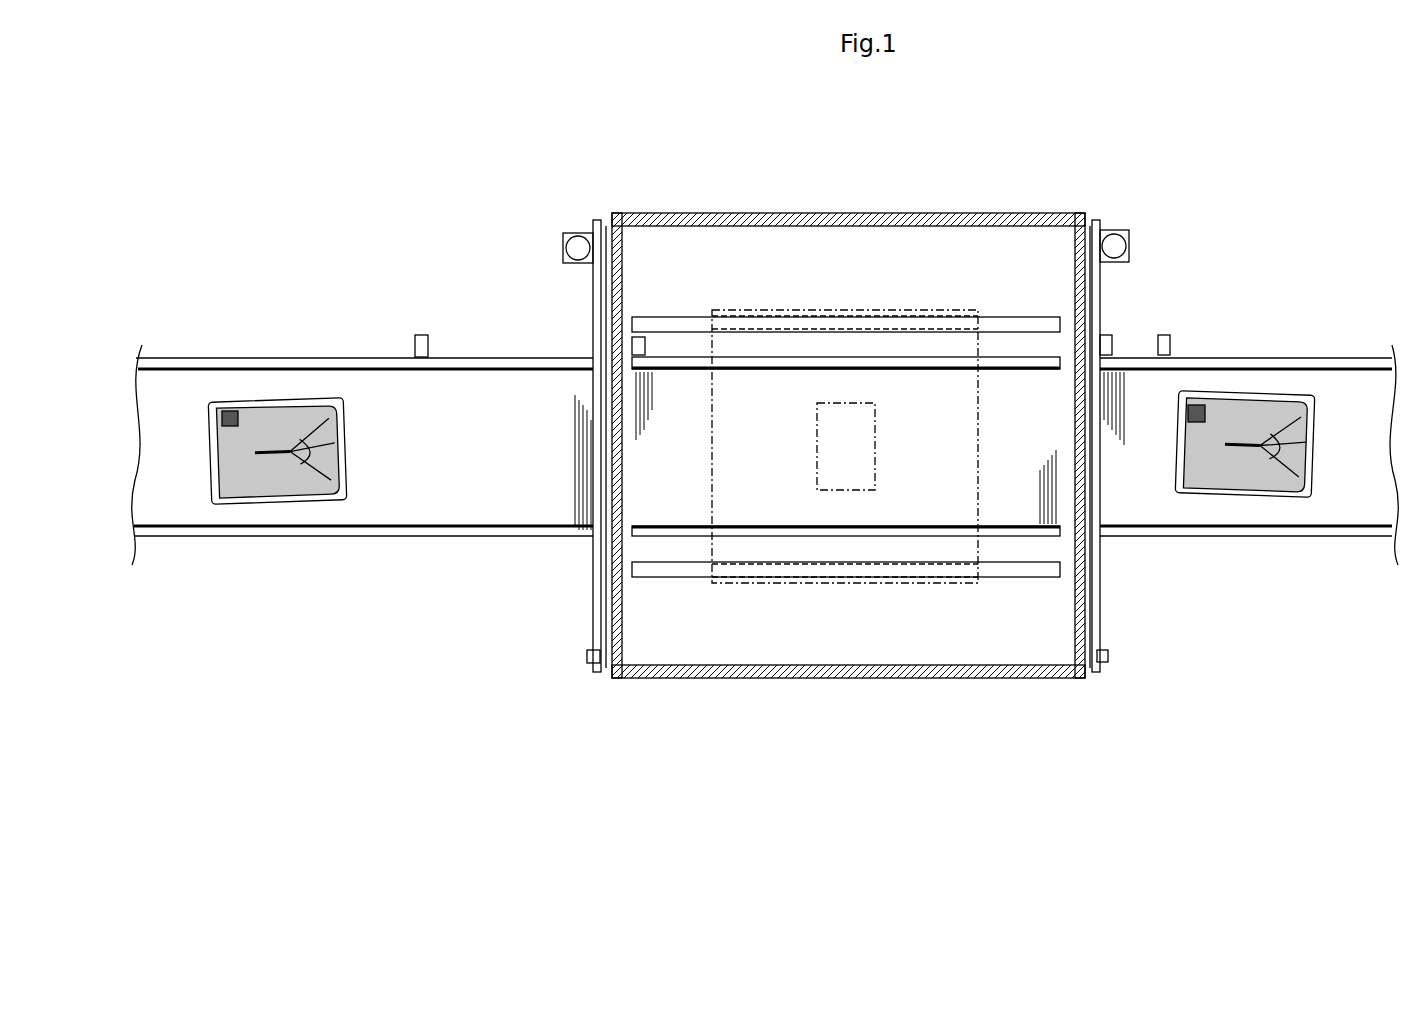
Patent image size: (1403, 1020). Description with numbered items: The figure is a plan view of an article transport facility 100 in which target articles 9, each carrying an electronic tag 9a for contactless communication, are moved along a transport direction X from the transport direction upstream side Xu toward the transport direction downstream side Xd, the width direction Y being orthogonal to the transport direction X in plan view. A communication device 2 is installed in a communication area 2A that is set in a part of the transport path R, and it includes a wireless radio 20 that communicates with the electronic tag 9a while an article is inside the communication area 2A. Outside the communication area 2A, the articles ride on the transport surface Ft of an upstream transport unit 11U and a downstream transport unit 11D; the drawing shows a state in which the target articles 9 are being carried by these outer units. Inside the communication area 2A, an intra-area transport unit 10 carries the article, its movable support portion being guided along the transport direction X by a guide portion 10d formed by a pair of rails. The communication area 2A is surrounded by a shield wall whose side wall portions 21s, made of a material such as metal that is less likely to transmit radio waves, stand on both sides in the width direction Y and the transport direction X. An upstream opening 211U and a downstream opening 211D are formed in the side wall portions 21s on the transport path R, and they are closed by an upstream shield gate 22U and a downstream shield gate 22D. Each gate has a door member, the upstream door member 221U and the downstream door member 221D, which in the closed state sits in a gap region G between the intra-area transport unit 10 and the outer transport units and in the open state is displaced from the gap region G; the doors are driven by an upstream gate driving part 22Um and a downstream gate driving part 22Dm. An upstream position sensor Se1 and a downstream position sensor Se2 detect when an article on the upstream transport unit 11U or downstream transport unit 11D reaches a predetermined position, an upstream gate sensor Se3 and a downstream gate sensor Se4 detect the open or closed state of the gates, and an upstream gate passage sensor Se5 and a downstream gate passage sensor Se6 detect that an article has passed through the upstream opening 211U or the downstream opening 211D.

The article transport facility 100 is at (288, 170).
The upstream transport unit 11U is at (205, 290).
The downstream transport unit 11D is at (1320, 337).
The transport surface Ft is at (370, 392).
The transport path R is at (290, 560).
The target article 9 is at (345, 465).
The electronic tag 9a is at (220, 410).
The communication device 2 is at (951, 436).
The communication area 2A is at (940, 248).
The side wall portion 21s is at (818, 213).
The upstream shield gate 22U is at (570, 287).
The upstream gate driving part 22Um is at (578, 232).
The upstream door member 221U is at (600, 325).
The upstream opening 211U is at (605, 548).
The downstream shield gate 22D is at (1110, 548).
The downstream gate driving part 22Dm is at (1115, 230).
The downstream door member 221D is at (1093, 555).
The downstream opening 211D is at (1097, 335).
The intra-area transport unit 10 is at (700, 345).
The guide portion 10d is at (995, 320).
The wireless radio 20 is at (870, 468).
The gap region G is at (628, 546).
The upstream position sensor Se1 is at (420, 333).
The downstream position sensor Se2 is at (1172, 333).
The upstream gate sensor Se3 is at (583, 658).
The downstream gate sensor Se4 is at (1105, 665).
The upstream gate passage sensor Se5 is at (640, 347).
The downstream gate passage sensor Se6 is at (1110, 335).
The transport direction X is at (343, 752).
The transport direction upstream side Xu is at (171, 754).
The transport direction downstream side Xd is at (364, 754).
The width direction Y is at (212, 787).